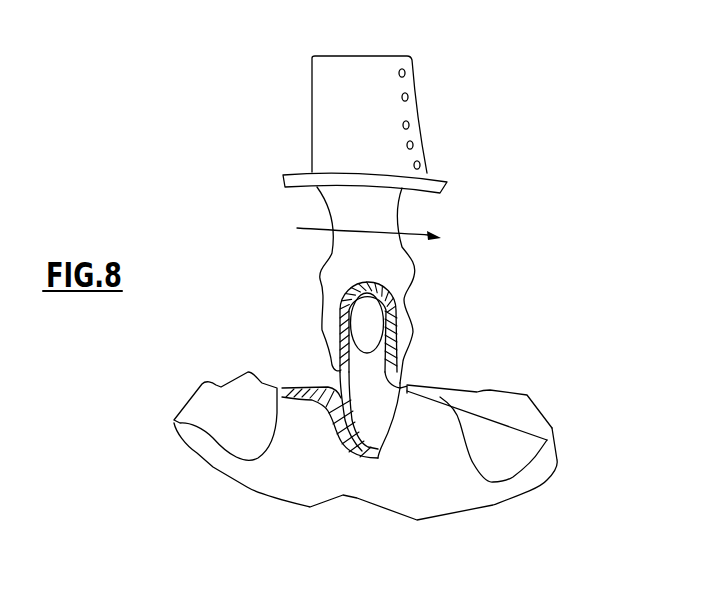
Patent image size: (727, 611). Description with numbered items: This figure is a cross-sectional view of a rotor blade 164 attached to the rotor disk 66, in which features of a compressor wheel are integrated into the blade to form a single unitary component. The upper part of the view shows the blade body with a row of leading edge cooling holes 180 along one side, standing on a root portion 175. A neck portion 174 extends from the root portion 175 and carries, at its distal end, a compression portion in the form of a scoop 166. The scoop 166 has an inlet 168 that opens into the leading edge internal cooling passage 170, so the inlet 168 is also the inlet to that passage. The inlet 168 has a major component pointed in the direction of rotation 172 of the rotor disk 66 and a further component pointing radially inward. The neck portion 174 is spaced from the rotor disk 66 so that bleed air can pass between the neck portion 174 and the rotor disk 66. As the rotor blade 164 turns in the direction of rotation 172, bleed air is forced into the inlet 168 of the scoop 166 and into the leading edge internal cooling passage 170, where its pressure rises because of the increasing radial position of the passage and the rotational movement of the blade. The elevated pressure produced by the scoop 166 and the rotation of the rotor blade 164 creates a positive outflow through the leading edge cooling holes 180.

The rotor blade 164 is at (442, 54).
The leading edge cooling holes 180 is at (407, 97).
The root portion 175 is at (400, 268).
The direction of rotation 172 is at (310, 228).
The leading edge internal cooling passage 170 is at (352, 331).
The scoop 166 is at (350, 456).
The neck portion 174 is at (334, 421).
The inlet 168 is at (399, 435).
The rotor disk 66 is at (401, 458).